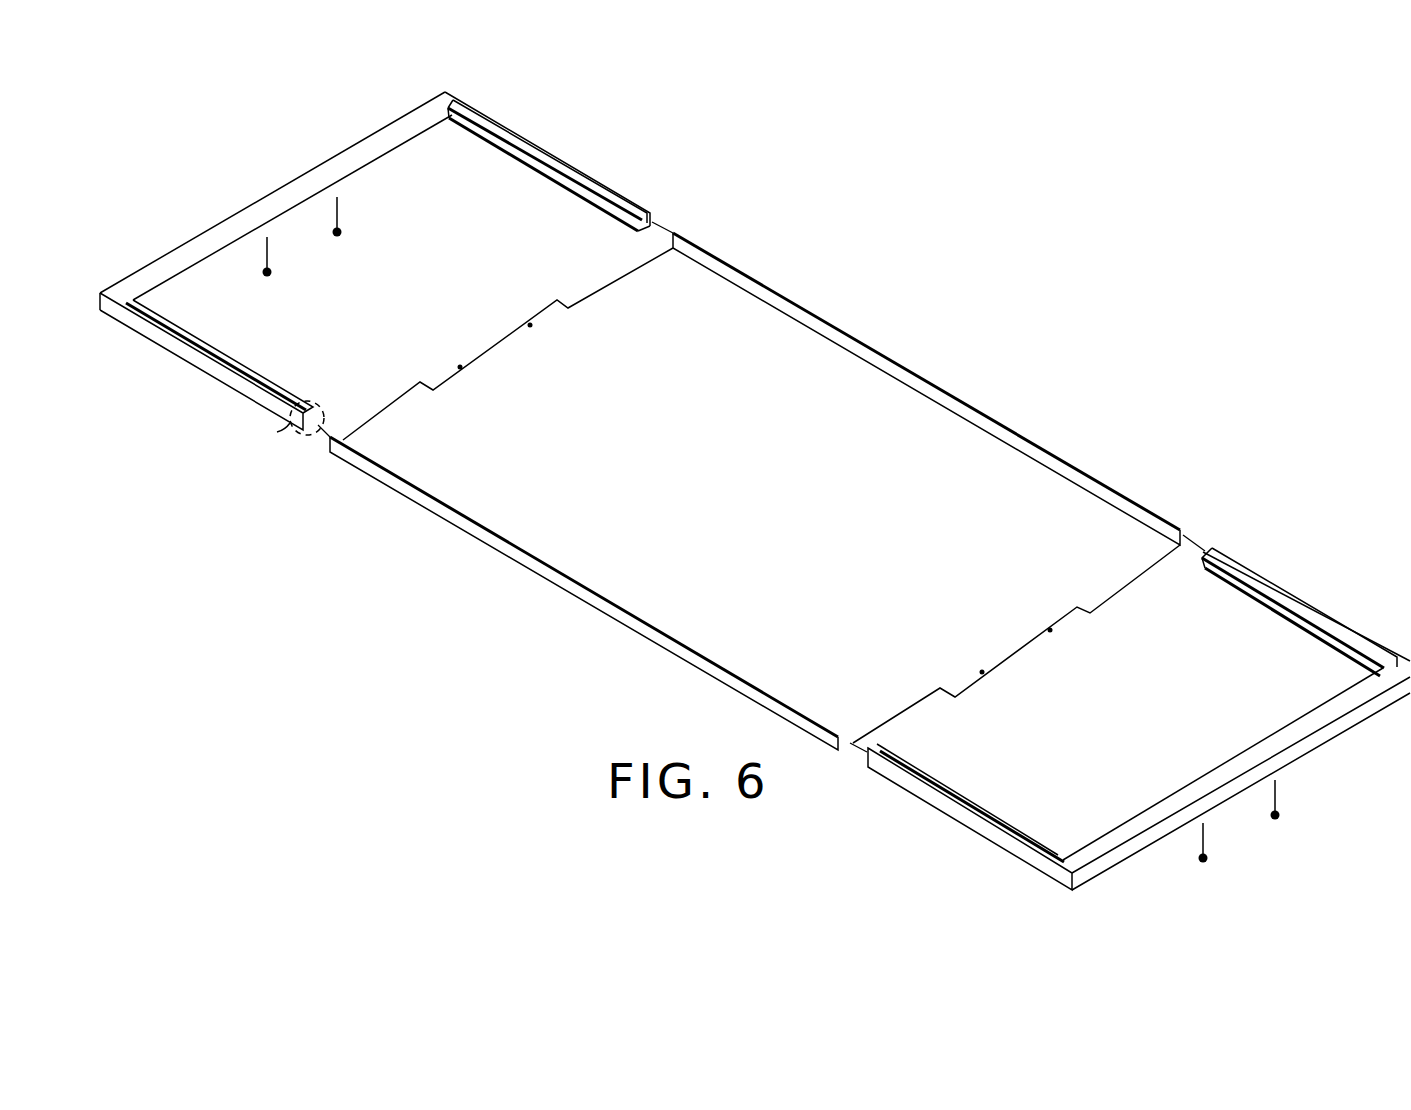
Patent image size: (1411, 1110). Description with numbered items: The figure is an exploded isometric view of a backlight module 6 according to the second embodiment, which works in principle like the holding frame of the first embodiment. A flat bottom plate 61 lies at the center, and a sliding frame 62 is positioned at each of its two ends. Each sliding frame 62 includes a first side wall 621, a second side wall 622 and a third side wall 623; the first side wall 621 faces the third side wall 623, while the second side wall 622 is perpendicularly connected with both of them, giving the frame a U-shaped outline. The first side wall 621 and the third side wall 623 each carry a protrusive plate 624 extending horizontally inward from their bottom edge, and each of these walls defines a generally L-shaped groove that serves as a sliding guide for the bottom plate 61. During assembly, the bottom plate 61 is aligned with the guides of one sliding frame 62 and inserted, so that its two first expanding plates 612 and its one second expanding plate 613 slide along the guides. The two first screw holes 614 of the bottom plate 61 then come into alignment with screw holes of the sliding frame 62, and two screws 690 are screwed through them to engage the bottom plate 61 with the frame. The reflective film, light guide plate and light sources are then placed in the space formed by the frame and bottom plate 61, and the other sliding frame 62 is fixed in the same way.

The backlight module 6 is at (924, 327).
The bottom plate 61 is at (479, 321).
The first expanding plates 612 is at (1097, 493).
The second expanding plate 613 is at (967, 687).
The first screw holes 614 is at (457, 360).
The sliding frames 62 is at (755, 491).
The first side wall 621 is at (205, 358).
The second side wall 622 is at (350, 153).
The third side wall 623 is at (505, 123).
The protrusive plate 624 is at (590, 198).
The screws 690 is at (1277, 812).